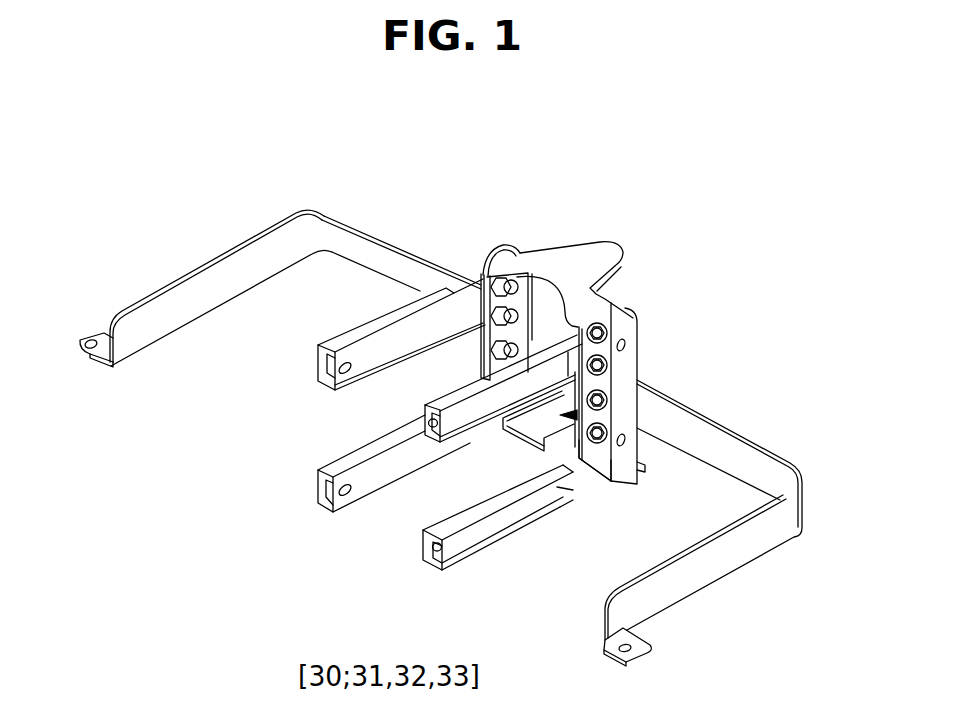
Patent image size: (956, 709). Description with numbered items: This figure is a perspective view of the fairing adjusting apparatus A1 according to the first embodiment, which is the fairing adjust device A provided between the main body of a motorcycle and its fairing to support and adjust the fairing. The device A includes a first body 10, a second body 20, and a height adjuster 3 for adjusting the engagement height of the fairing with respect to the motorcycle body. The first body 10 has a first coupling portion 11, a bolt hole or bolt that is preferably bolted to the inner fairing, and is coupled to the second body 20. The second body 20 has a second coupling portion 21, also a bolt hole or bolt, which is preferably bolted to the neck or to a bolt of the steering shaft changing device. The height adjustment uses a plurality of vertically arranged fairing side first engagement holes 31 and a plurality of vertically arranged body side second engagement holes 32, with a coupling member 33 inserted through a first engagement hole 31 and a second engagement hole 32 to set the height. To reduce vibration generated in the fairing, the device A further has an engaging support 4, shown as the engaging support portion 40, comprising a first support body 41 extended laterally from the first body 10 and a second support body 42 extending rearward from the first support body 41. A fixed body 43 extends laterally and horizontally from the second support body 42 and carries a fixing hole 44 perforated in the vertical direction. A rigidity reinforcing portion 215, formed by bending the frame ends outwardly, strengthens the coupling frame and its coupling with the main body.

The height adjuster 3 is at (540, 420).
The engaging support 4 is at (433, 417).
The first body 10 is at (556, 262).
The first coupling portion 11 is at (635, 328).
The second body 20 is at (589, 462).
The second coupling portion 21 is at (352, 490).
The rigidity reinforcing portion 215 is at (358, 335).
The fairing side first engagement hole 31 is at (604, 350).
The body side second engagement hole 32 is at (606, 415).
The coupling member 33 is at (597, 365).
The engaging support portion 40 is at (707, 448).
The first support body 41 is at (402, 258).
The second support body 42 is at (217, 273).
The fixed body 43 is at (100, 360).
The fixing hole 44 is at (92, 336).
The fairing adjust device A is at (673, 207).
The fairing adjusting apparatus A1 is at (158, 143).